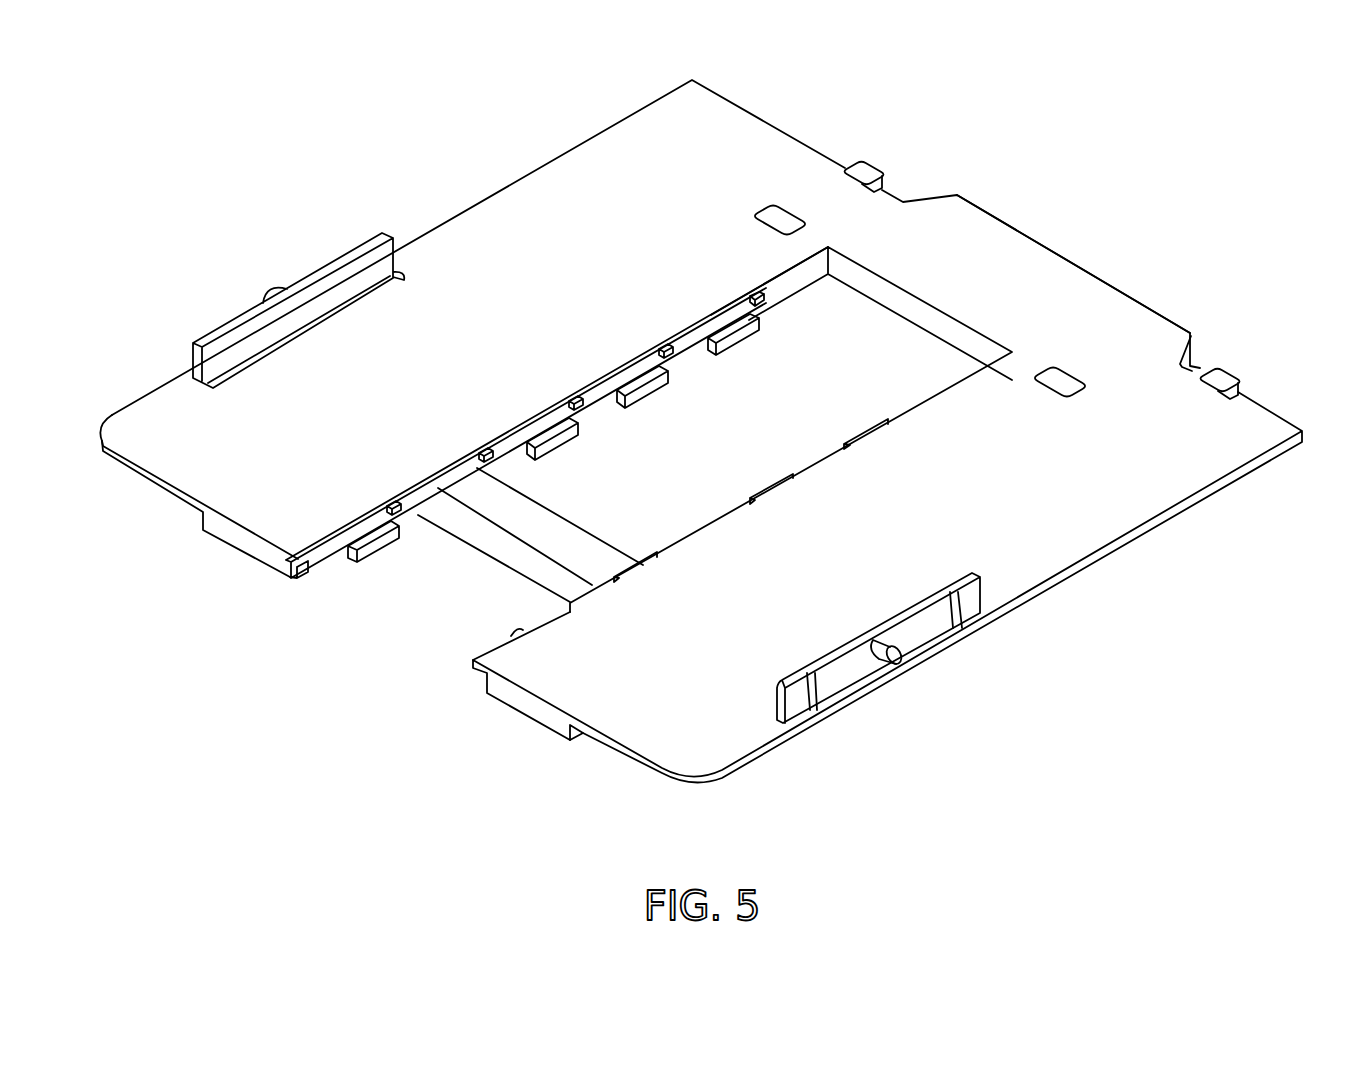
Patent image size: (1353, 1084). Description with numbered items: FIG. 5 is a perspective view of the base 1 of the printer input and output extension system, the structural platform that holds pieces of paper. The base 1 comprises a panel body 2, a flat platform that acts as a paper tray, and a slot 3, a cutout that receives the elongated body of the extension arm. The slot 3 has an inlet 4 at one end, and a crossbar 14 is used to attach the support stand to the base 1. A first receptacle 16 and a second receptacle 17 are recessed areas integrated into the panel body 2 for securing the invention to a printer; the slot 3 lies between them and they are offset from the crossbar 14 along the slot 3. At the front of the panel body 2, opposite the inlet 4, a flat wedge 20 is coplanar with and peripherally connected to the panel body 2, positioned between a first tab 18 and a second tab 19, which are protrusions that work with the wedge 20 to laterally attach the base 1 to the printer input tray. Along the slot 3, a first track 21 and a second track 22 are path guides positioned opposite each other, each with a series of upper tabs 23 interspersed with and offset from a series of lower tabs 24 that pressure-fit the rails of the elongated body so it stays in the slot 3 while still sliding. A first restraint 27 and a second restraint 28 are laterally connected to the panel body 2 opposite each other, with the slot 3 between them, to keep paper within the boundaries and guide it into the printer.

The base 1 is at (381, 101).
The panel body 2 is at (524, 185).
The slot 3 is at (418, 601).
The inlet 4 is at (296, 583).
The crossbar 14 is at (502, 558).
The first receptacle 16 is at (779, 210).
The second receptacle 17 is at (1057, 378).
The first tab 18 is at (871, 173).
The second tab 19 is at (1229, 378).
The flat wedge 20 is at (1090, 268).
The first track 21 is at (683, 395).
The second track 22 is at (700, 505).
The series of upper tabs 23 is at (698, 341).
The series of lower tabs 24 is at (742, 327).
The first restraint 27 is at (328, 312).
The second restraint 28 is at (835, 652).